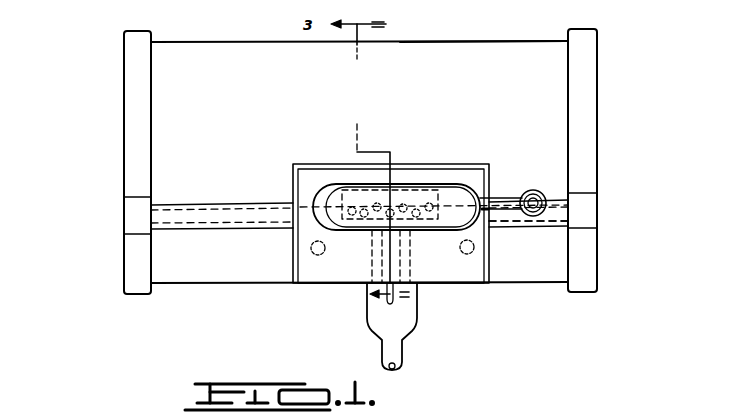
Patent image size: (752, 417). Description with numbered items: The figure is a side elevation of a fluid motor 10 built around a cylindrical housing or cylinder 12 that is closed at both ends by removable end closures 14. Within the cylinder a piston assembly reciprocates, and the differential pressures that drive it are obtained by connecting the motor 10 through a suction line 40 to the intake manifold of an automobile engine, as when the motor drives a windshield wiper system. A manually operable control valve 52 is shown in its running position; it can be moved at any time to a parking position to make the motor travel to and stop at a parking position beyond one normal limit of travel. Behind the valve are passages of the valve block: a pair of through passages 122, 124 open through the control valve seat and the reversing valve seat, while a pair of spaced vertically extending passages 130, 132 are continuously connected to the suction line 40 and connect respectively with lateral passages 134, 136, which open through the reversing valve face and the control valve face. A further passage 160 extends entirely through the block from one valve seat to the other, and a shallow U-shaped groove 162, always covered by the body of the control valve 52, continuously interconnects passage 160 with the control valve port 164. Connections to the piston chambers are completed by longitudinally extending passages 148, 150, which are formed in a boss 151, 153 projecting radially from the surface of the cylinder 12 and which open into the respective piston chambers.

The motor 10 is at (438, 42).
The cylinder 12 is at (517, 45).
The end closures 14 is at (128, 124).
The boss 151 is at (217, 205).
The longitudinally extending passage 148 is at (210, 228).
The passage 160 is at (492, 177).
The through passage 124 is at (327, 287).
The through passage 122 is at (395, 200).
The groove 162 is at (410, 195).
The lateral passage 134 is at (440, 192).
The control valve 52 is at (462, 190).
The boss 153 is at (548, 198).
The longitudinally extending passage 150 is at (537, 225).
The control valve port 164 is at (390, 257).
The vertically extending passage 130 is at (404, 267).
The lateral passage 136 is at (334, 266).
The vertically extending passage 132 is at (372, 235).
The line 40 is at (396, 352).